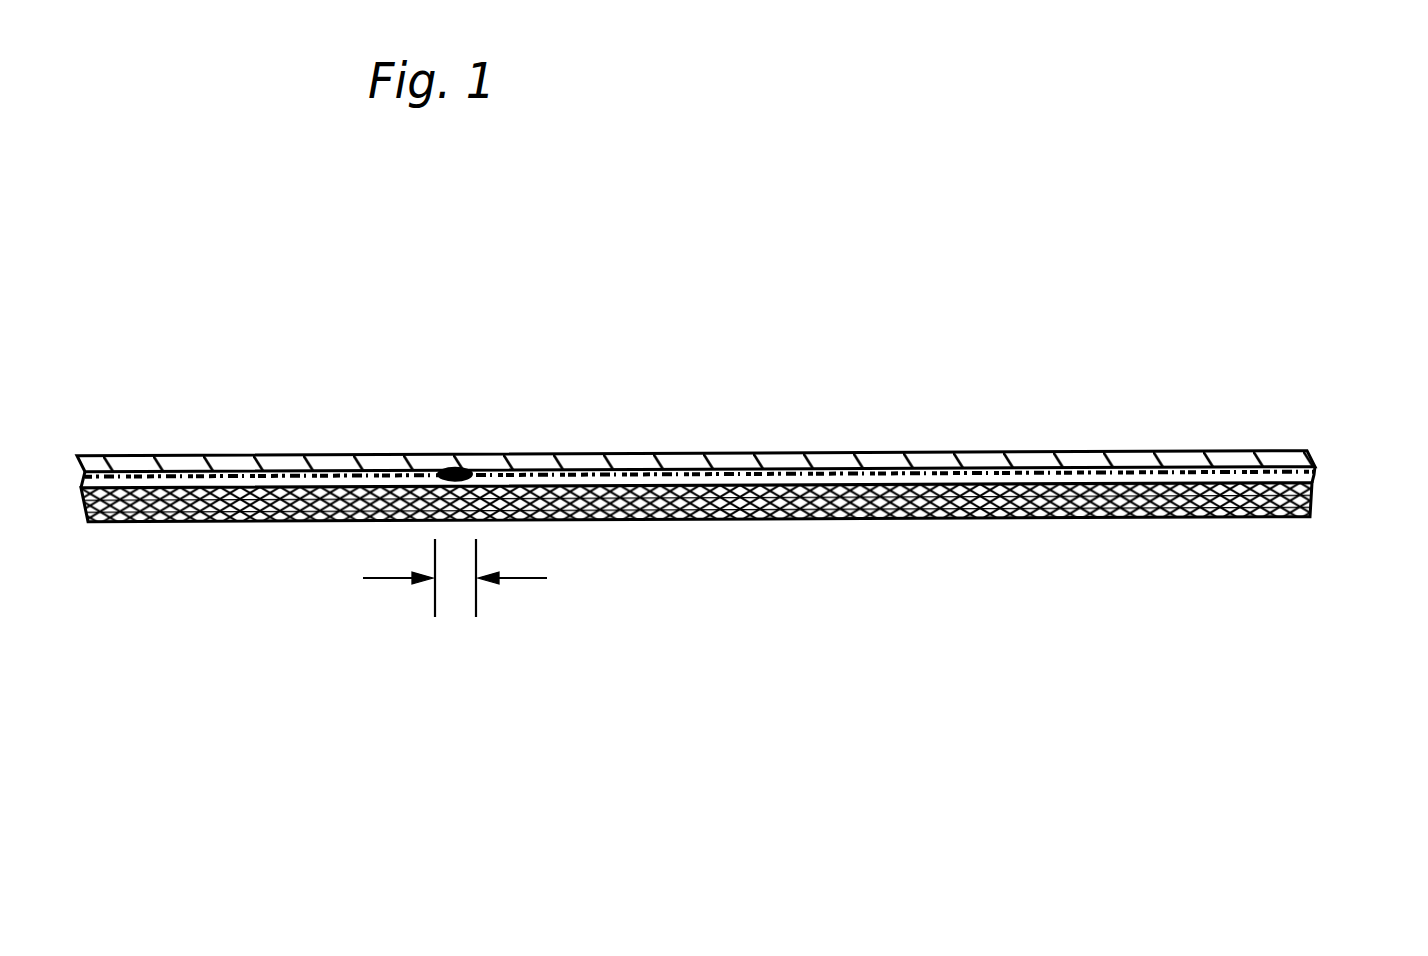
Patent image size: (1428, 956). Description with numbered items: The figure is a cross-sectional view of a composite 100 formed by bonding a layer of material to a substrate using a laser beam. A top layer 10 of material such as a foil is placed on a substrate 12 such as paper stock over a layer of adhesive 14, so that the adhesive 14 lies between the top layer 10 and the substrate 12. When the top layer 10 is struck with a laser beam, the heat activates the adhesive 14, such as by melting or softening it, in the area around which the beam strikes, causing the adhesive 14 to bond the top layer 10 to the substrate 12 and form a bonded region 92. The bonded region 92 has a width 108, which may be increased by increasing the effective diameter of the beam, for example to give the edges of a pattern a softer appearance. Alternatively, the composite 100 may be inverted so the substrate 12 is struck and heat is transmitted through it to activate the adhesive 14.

The composite 100 is at (746, 300).
The top layer 10 is at (1108, 460).
The substrate 12 is at (1015, 508).
The layer of adhesive 14 is at (1313, 477).
The bonded region 92 is at (450, 462).
The width of the bond 108 is at (455, 612).